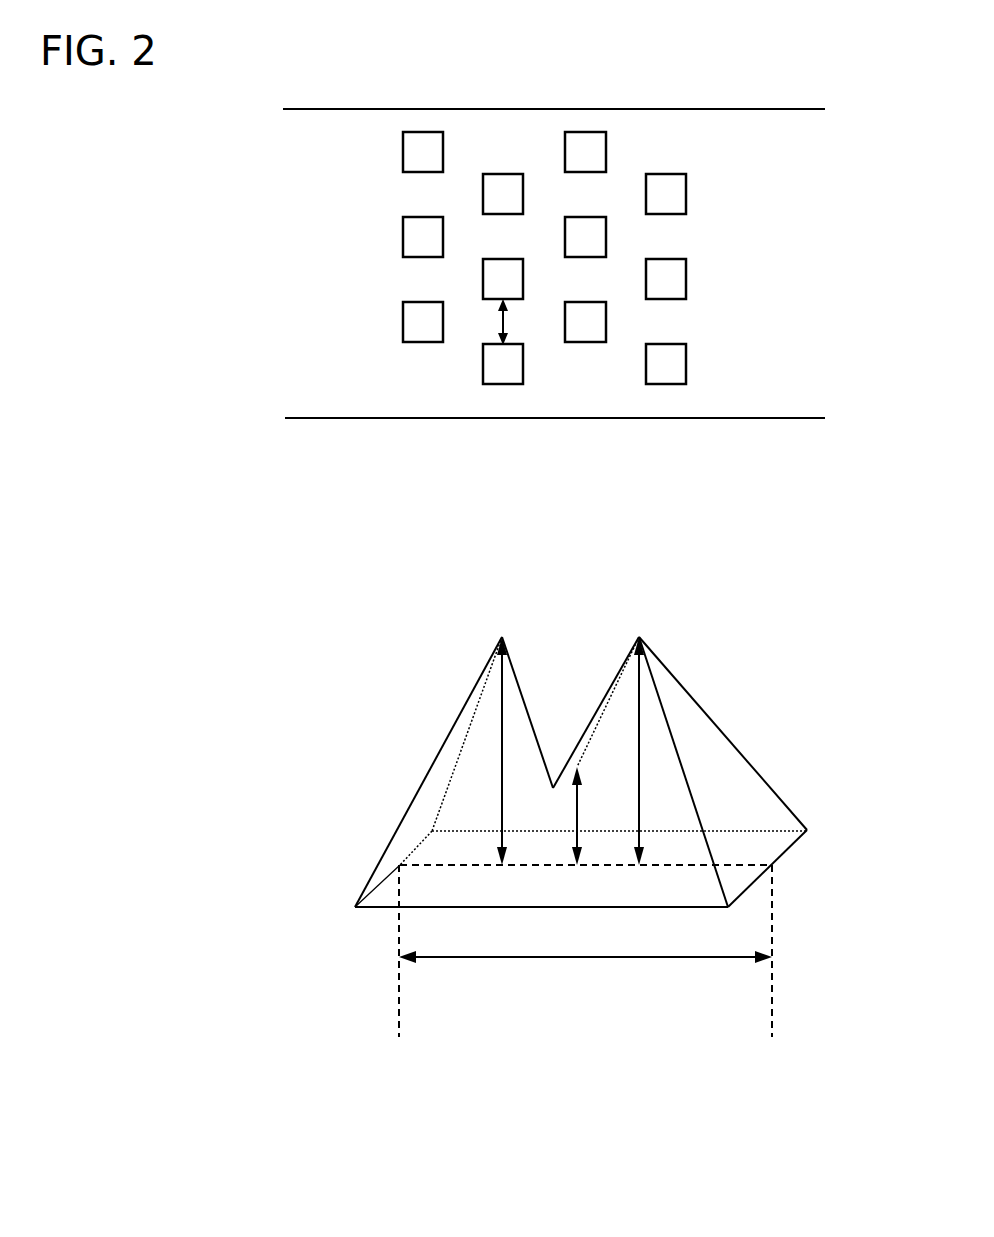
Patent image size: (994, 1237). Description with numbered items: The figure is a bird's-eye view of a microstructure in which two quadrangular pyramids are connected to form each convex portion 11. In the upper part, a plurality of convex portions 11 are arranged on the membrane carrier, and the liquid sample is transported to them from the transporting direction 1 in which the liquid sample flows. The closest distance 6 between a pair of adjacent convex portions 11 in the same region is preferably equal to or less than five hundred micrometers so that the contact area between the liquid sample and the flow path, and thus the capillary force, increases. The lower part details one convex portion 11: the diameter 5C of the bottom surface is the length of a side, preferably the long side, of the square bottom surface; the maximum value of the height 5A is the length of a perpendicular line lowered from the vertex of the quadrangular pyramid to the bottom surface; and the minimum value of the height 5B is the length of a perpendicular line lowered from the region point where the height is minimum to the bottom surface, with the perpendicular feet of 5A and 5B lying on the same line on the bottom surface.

The transporting direction 1 is at (226, 246).
The convex portion 11 is at (680, 285).
The closest distance between convex portions 6 is at (513, 330).
The maximum value of the height 5A is at (497, 813).
The minimum value of the height 5B is at (578, 840).
The diameter of the bottom surface 5C is at (585, 953).